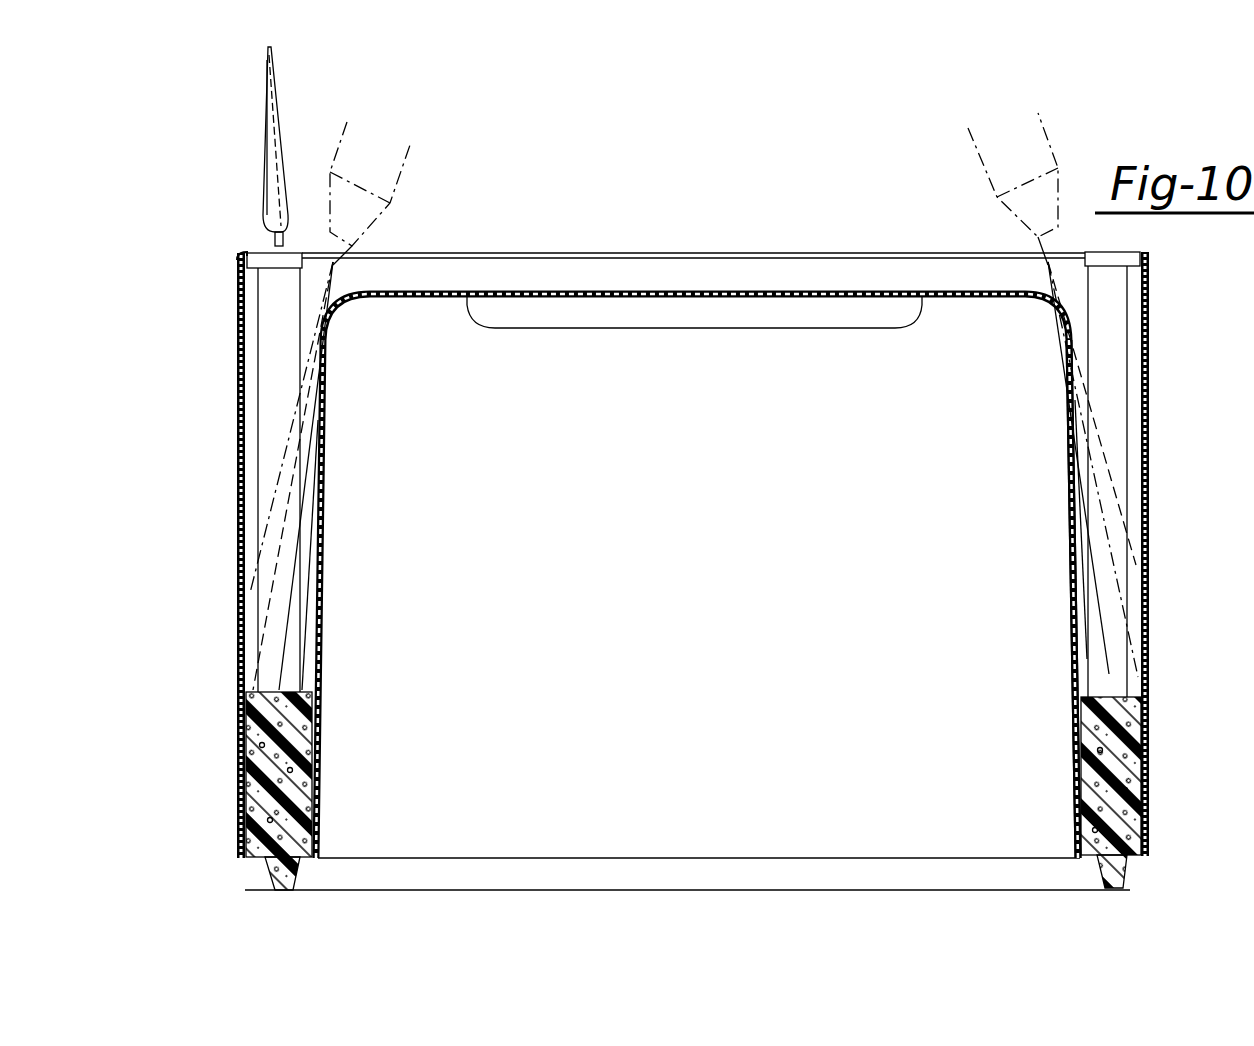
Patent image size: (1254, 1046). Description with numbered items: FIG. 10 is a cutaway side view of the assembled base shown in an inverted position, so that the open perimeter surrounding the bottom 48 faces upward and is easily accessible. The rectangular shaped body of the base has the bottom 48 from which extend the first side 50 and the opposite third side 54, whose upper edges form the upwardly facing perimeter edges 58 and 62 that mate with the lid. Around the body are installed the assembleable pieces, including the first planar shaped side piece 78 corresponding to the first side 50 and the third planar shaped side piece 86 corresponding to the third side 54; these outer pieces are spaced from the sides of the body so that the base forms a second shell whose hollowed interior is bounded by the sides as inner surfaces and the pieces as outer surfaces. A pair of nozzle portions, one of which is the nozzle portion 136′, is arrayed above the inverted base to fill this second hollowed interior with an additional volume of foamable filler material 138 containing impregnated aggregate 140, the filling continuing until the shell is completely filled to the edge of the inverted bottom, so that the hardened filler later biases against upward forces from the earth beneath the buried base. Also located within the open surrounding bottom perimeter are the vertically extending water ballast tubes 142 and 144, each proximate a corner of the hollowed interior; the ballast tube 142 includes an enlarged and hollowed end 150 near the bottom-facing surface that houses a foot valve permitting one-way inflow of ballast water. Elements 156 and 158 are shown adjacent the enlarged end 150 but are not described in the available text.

The bottom 48 is at (404, 297).
The first side 50 is at (1075, 620).
The third side 54 is at (318, 598).
The upwardly facing perimeter edge 58 is at (1125, 890).
The upwardly facing perimeter edge 62 is at (277, 890).
The first planar shaped side piece 78 is at (1148, 605).
The third planar shaped side piece 86 is at (240, 605).
The nozzle portion 136′ is at (392, 150).
The foamable filler material 138 is at (243, 755).
The impregnated aggregate 140 is at (242, 832).
The water ballast tube 142 is at (257, 358).
The water ballast tube 144 is at (1117, 340).
The enlarged and hollowed end 150 is at (245, 248).
The needle 156 is at (263, 182).
The needle stem 158 is at (273, 238).